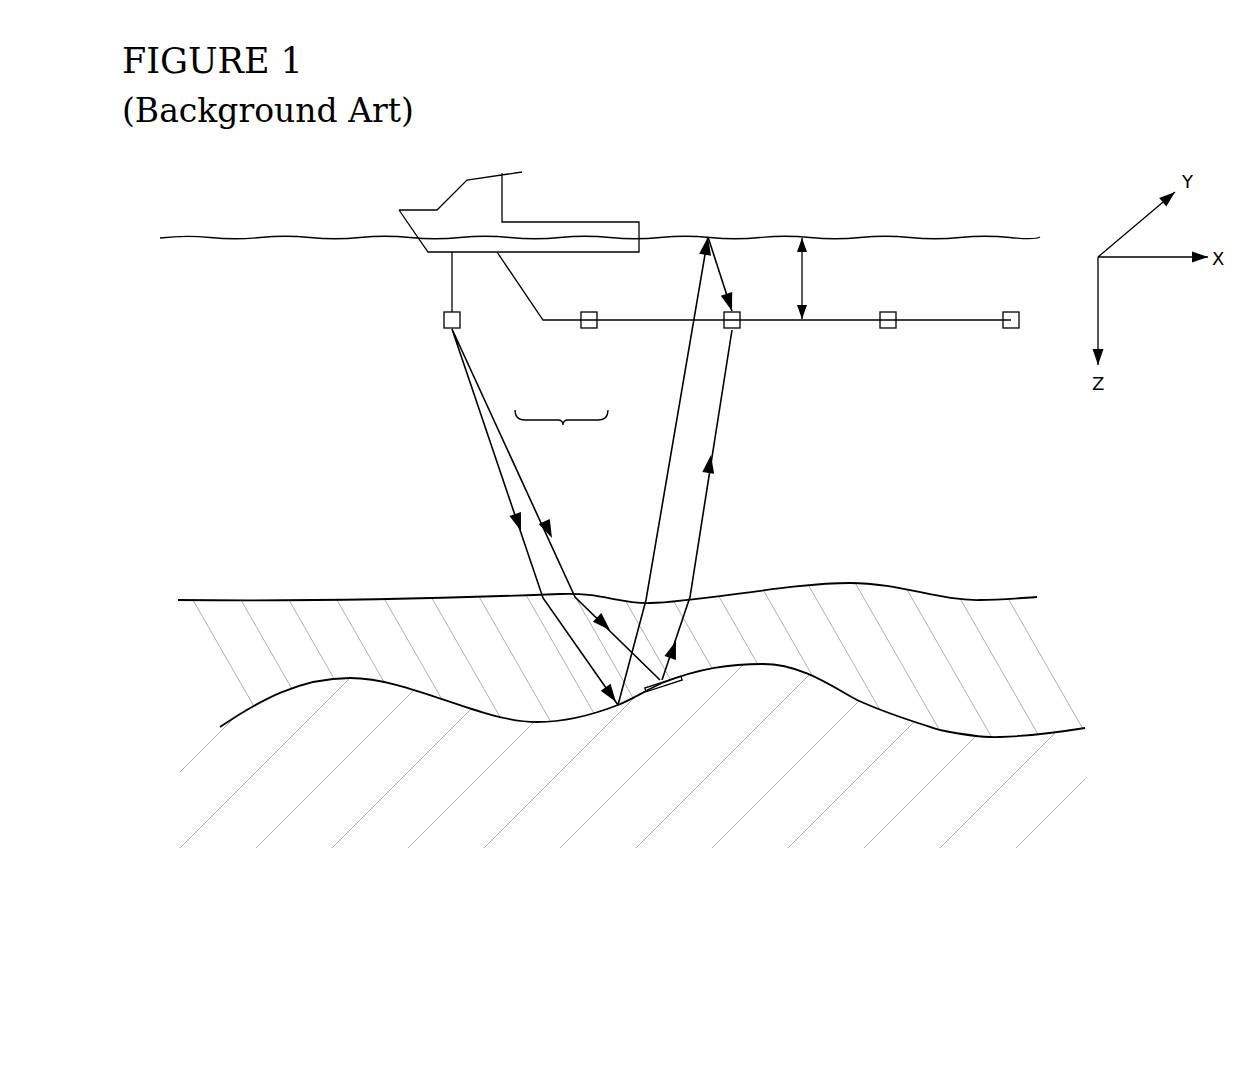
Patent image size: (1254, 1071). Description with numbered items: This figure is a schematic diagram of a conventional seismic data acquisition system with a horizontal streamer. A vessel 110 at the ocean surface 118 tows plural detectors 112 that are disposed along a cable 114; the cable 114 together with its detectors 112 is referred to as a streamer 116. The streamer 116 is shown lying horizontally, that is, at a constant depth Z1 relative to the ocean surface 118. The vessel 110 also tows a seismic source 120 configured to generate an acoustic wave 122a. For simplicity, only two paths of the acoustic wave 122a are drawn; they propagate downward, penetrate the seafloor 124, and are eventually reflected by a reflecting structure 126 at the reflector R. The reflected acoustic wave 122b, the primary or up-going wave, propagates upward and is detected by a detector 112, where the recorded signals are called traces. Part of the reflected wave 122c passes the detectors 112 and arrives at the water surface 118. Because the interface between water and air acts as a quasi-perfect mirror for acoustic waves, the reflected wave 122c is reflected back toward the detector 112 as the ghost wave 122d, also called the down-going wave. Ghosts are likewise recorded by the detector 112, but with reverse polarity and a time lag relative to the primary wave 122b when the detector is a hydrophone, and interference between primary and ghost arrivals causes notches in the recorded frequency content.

The vessel 110 is at (458, 205).
The detectors 112 is at (589, 330).
The cable 114 is at (568, 322).
The streamer 116 is at (561, 431).
The ocean surface 118 is at (740, 235).
The seismic source 120 is at (443, 319).
The acoustic wave 122a is at (513, 460).
The reflected acoustic wave 122b is at (700, 528).
The reflected wave 122c is at (685, 370).
The ghost wave 122d is at (744, 274).
The seafloor 124 is at (872, 583).
The reflecting structure 126 is at (855, 698).
The reflector R is at (657, 692).
The constant depth Z1 is at (804, 271).